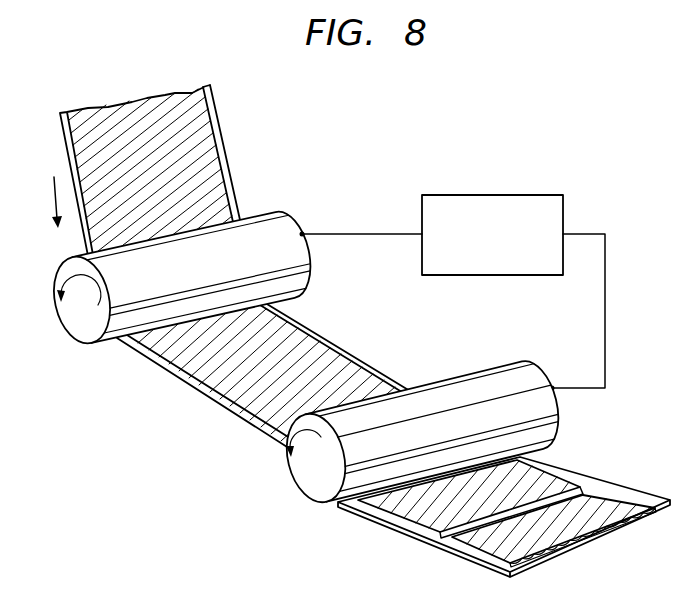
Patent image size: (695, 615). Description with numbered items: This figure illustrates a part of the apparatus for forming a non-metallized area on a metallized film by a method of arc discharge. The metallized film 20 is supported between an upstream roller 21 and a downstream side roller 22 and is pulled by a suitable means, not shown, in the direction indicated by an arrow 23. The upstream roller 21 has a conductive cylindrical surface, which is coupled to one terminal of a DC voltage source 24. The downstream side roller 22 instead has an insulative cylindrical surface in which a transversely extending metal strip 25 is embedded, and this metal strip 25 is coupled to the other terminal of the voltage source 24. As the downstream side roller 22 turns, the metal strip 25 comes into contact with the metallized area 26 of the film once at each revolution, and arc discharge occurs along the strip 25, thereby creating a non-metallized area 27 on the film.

The metallized film 20 is at (493, 571).
The upstream roller 21 is at (273, 212).
The downstream side roller 22 is at (508, 363).
The arrow 23 is at (52, 195).
The DC voltage source 24 is at (478, 193).
The metal strip 25 is at (430, 418).
The metallized area 26 is at (223, 413).
The non-metallized area 27 is at (580, 490).